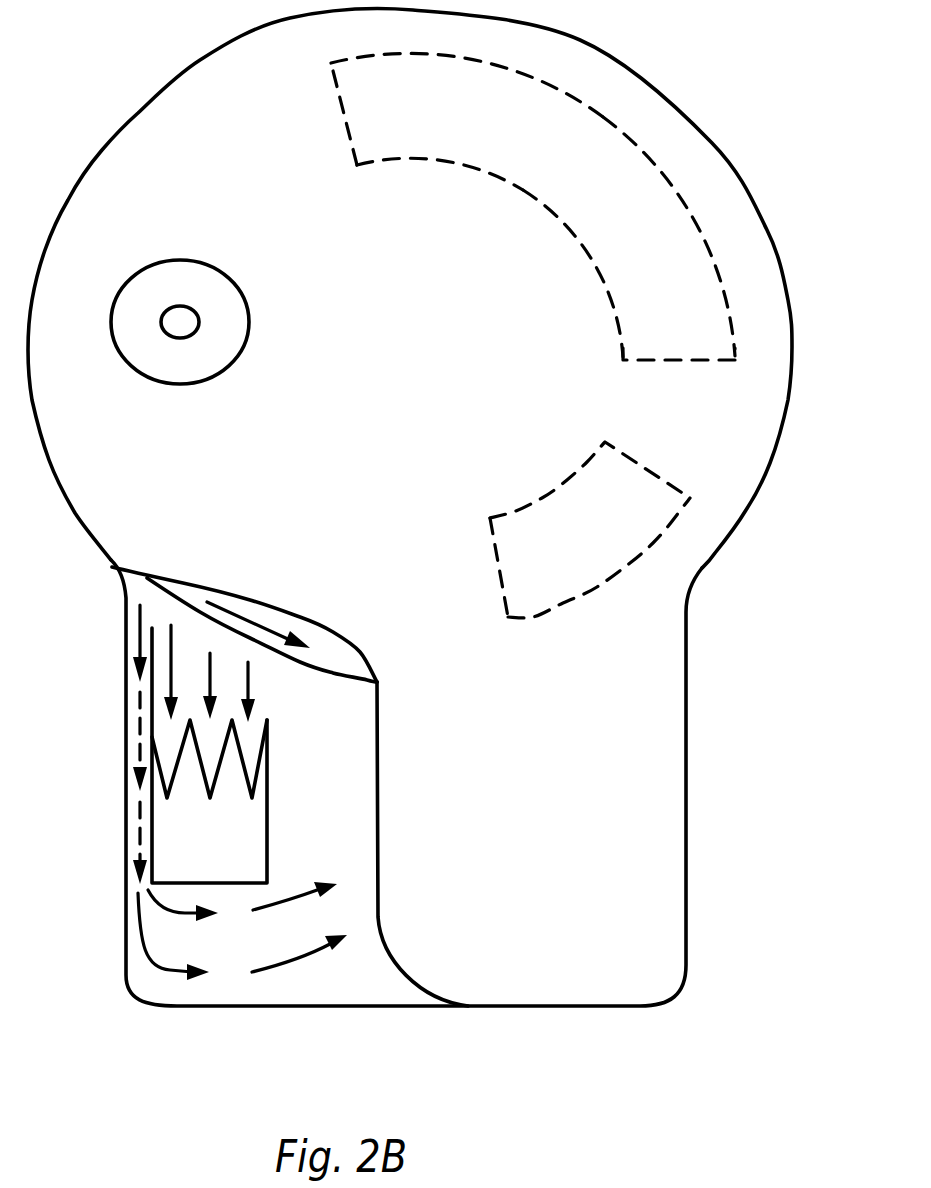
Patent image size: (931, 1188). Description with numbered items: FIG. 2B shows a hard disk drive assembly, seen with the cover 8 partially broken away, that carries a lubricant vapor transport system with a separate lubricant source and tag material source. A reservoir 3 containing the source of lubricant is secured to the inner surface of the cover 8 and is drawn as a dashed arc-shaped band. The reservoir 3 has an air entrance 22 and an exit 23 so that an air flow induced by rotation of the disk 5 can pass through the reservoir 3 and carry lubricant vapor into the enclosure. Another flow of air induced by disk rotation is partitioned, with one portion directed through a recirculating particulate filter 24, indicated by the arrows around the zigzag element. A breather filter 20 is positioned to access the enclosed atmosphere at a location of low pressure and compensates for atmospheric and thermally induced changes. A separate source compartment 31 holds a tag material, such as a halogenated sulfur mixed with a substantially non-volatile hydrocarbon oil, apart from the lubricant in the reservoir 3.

The reservoir 3 is at (727, 277).
The disk 5 is at (315, 673).
The cover 8 is at (712, 144).
The breather filter 20 is at (248, 323).
The air entrance 22 is at (676, 362).
The exit 23 is at (342, 118).
The recirculating particulate filter 24 is at (267, 800).
The separate source compartment 31 is at (500, 572).